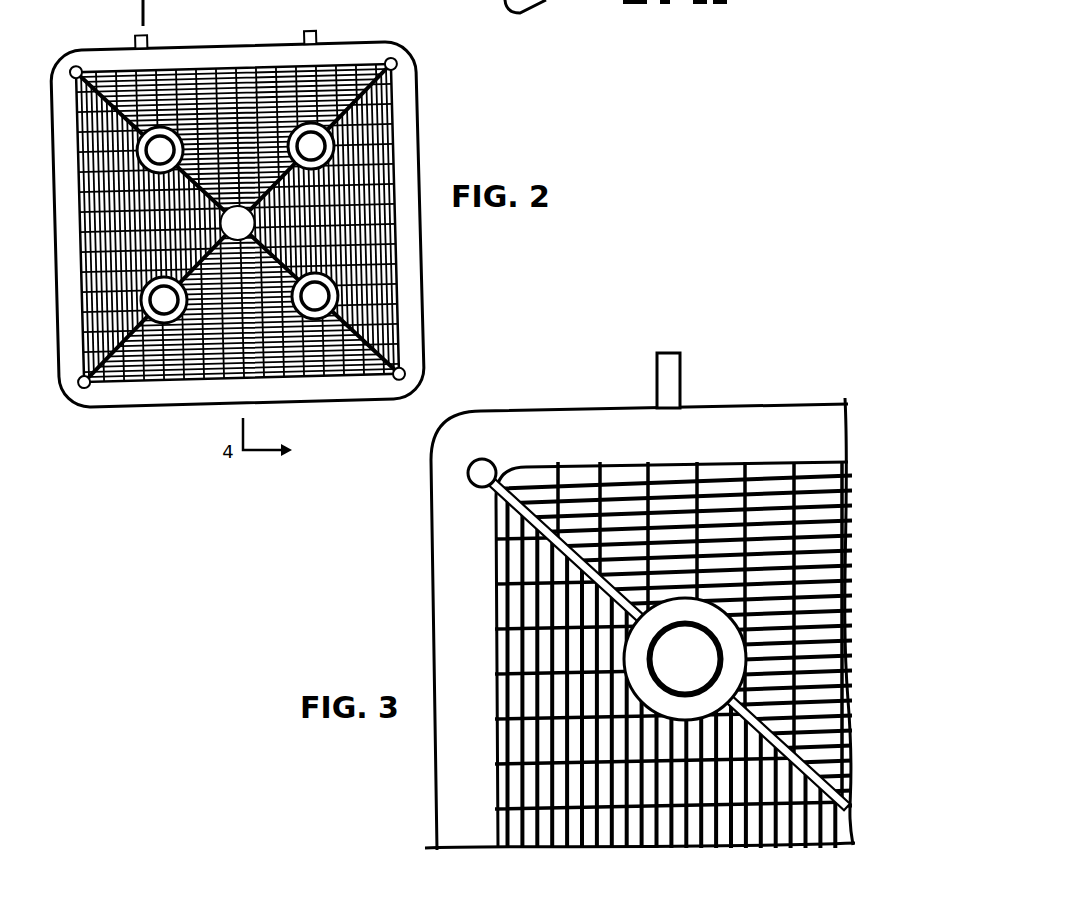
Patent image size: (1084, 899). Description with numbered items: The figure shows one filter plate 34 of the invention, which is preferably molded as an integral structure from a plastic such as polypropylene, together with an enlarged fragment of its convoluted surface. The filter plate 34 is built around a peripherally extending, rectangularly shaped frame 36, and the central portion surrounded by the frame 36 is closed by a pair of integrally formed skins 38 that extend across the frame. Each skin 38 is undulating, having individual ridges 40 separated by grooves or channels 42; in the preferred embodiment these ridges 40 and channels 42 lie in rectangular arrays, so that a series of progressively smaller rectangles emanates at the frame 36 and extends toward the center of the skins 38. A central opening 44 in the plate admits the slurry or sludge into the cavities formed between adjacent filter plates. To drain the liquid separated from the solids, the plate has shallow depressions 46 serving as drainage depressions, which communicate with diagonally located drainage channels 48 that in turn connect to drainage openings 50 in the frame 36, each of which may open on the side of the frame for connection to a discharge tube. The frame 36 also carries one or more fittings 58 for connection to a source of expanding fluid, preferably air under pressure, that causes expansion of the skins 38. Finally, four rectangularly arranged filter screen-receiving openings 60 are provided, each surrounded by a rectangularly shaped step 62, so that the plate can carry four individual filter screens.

In FIG. 2, the filter plate 34 is at (267, 206).
In FIG. 2, the frame 36 is at (117, 46).
In FIG. 3, the frame 36 is at (566, 410).
In FIG. 2, the skins 38 is at (382, 145).
In FIG. 3, the skins 38 is at (640, 624).
In FIG. 3, the ridges 40 is at (672, 656).
In FIG. 3, the grooves or channels 42 is at (674, 654).
In FIG. 2, the central opening 44 is at (259, 211).
In FIG. 3, the shallow depressions 46 is at (512, 610).
In FIG. 2, the drainage channels 48 is at (90, 89).
In FIG. 3, the drainage channels 48 is at (510, 521).
In FIG. 2, the drainage openings 50 is at (74, 65).
In FIG. 3, the drainage openings 50 is at (470, 473).
In FIG. 2, the fittings 58 is at (317, 31).
In FIG. 3, the fittings 58 is at (670, 353).
In FIG. 2, the filter screen-receiving openings 60 is at (136, 178).
In FIG. 3, the filter screen-receiving openings 60 is at (685, 644).
In FIG. 3, the rectangularly shaped step 62 is at (716, 600).